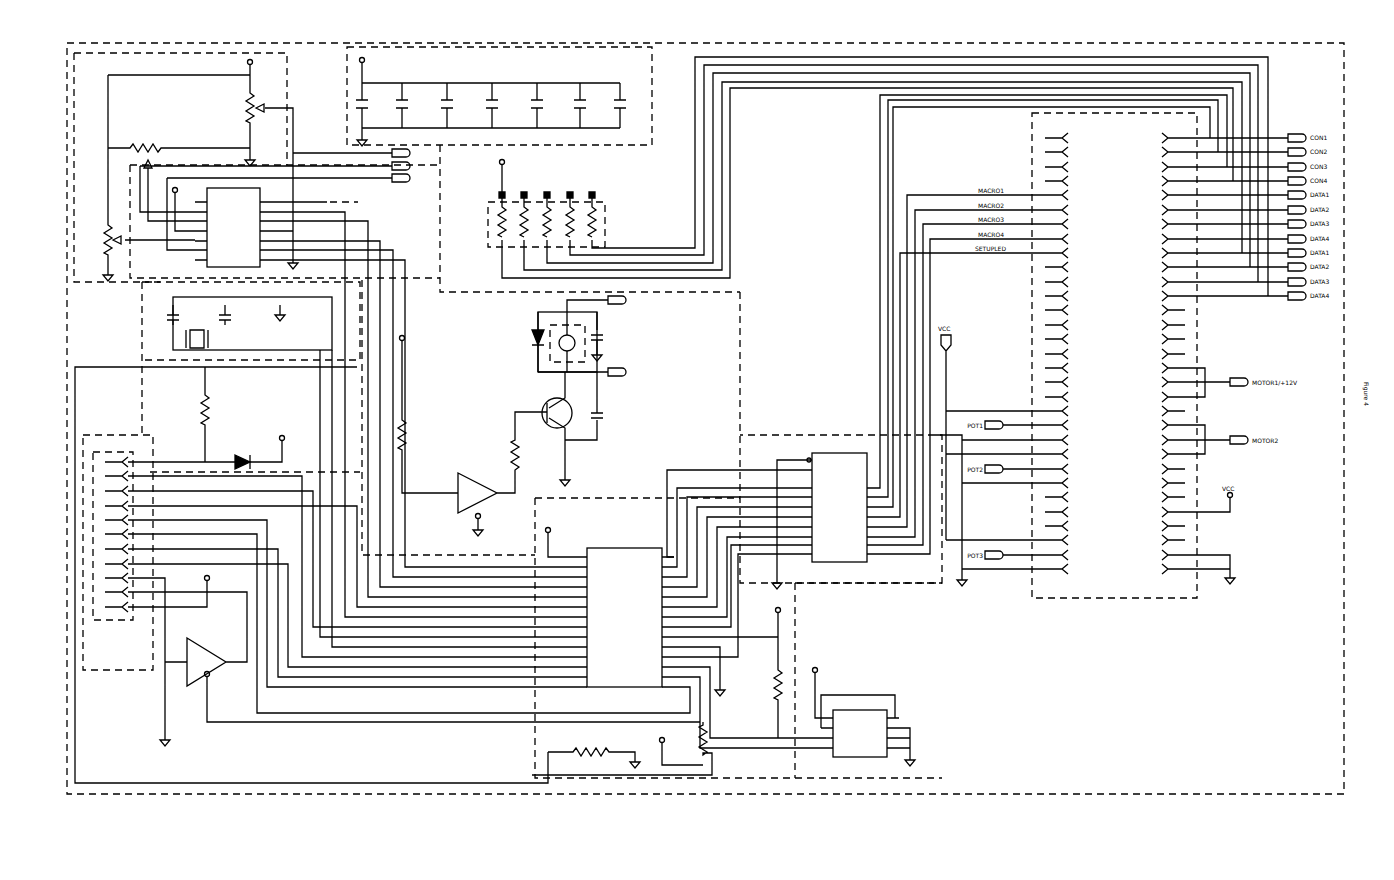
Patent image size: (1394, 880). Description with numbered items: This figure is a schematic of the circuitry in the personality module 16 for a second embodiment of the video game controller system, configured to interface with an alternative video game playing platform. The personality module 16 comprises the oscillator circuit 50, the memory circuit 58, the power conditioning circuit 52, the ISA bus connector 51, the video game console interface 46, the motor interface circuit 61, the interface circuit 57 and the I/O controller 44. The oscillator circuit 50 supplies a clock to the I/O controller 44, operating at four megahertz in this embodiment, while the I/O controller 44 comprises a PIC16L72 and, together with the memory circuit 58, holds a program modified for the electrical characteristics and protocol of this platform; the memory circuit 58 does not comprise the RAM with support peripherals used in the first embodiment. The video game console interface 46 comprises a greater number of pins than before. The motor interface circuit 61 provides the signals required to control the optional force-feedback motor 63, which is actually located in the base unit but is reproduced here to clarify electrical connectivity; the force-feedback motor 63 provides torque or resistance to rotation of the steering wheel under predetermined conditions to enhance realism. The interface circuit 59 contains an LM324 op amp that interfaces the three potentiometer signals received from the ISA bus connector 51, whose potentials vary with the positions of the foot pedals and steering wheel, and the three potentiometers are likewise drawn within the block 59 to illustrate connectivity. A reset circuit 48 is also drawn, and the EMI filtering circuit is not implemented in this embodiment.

The personality module 16 is at (1032, 765).
The I/O controller 44 is at (545, 775).
The video game console interface 46 is at (83, 672).
The reset circuit 48 is at (150, 425).
The oscillator circuit 50 is at (140, 288).
The ISA bus connector 51 is at (1122, 595).
The power conditioning circuit 52 is at (622, 88).
The interface circuit 57 is at (551, 417).
The memory circuit 58 is at (932, 625).
The interface circuit 59 is at (88, 50).
The motor interface circuit 61 is at (736, 296).
The force-feedback motor 63 is at (628, 352).